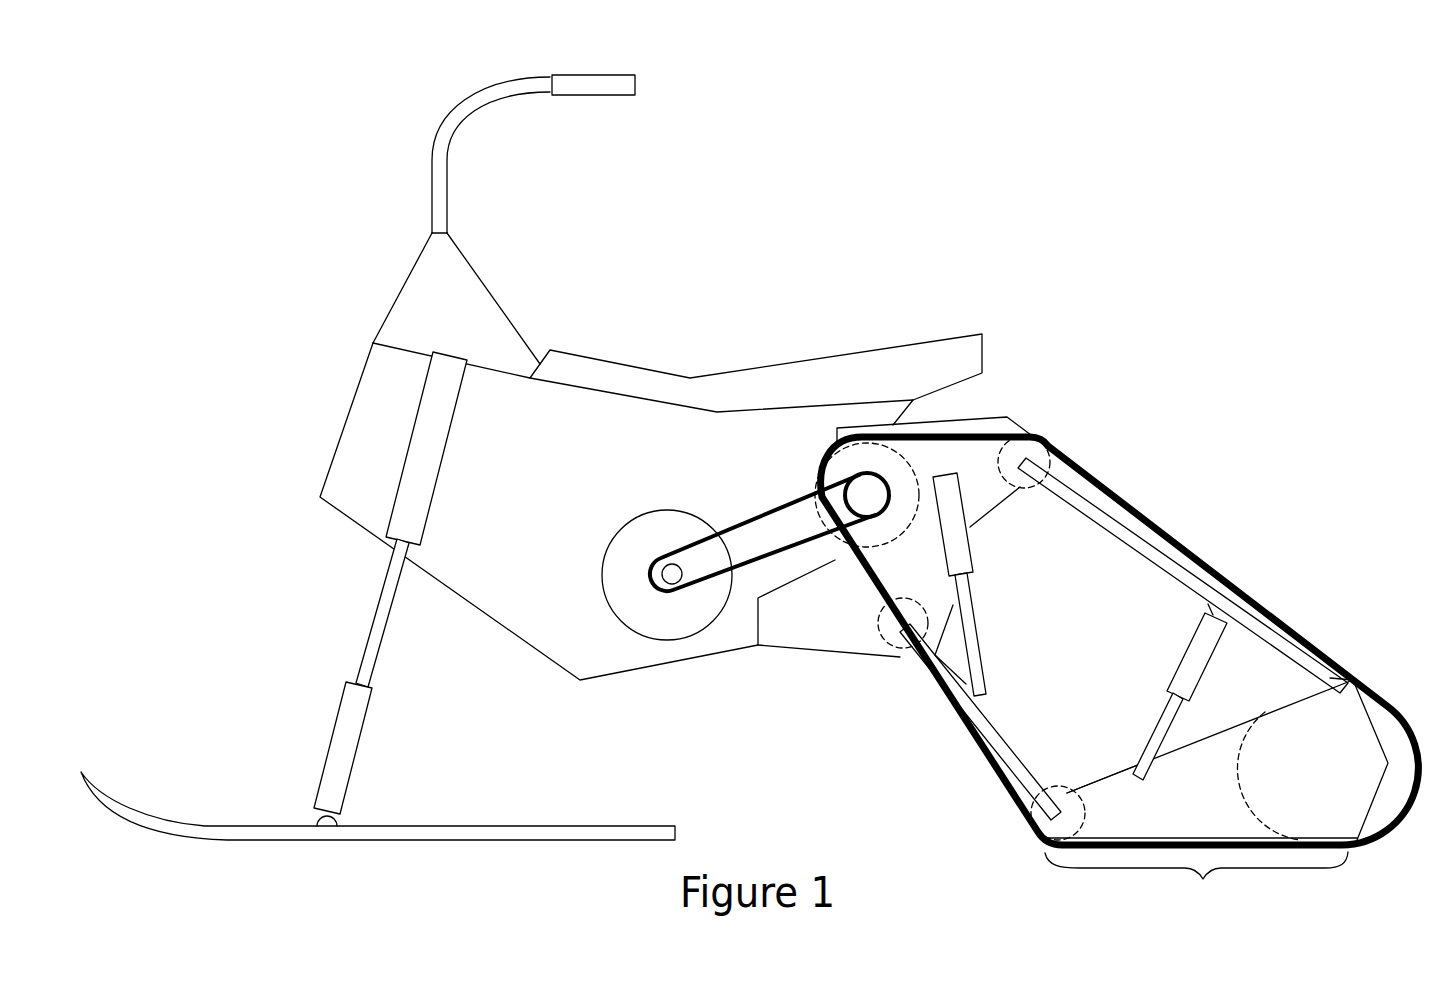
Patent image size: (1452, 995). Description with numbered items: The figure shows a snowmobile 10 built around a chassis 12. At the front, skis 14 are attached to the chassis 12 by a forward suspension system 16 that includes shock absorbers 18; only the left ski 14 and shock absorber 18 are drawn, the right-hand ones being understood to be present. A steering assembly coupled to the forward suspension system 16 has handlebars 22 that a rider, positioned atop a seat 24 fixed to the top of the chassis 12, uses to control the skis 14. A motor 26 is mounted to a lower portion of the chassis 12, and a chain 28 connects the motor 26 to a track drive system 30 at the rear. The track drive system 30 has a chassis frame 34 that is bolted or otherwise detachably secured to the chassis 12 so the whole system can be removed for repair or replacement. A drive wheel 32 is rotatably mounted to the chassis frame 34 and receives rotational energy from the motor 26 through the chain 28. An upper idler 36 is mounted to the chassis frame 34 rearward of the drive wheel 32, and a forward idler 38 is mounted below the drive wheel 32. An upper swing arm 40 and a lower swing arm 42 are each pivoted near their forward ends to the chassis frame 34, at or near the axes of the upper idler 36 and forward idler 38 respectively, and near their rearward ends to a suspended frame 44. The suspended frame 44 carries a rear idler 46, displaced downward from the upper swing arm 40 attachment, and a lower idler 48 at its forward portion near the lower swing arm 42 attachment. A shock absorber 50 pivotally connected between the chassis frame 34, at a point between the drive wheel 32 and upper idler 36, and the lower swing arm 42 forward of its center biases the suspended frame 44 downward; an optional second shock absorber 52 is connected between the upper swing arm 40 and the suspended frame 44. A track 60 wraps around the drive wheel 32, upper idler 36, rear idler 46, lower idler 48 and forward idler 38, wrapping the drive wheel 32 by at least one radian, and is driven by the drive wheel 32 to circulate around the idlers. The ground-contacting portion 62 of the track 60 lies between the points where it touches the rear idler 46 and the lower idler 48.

The snowmobile 10 is at (1043, 176).
The chassis 12 is at (612, 680).
The skis 14 is at (253, 825).
The forward suspension system 16 is at (336, 272).
The shock absorbers 18 is at (367, 625).
The handlebars 22 is at (532, 93).
The seat 24 is at (826, 357).
The motor 26 is at (624, 525).
The chain 28 is at (771, 508).
The track drive system 30 is at (1232, 525).
The drive wheel 32 is at (913, 467).
The chassis frame 34 is at (1007, 417).
The upper idler 36 is at (1023, 490).
The forward idler 38 is at (878, 614).
The upper swing arm 40 is at (1143, 540).
The lower swing arm 42 is at (985, 745).
The suspended frame 44 is at (1122, 767).
The rear idler 46 is at (1292, 680).
The lower idler 48 is at (1080, 800).
The shock absorber 50 is at (980, 620).
The second shock absorber 52 is at (1203, 620).
The track 60 is at (1297, 624).
The ground-contacting portion 62 is at (1196, 879).